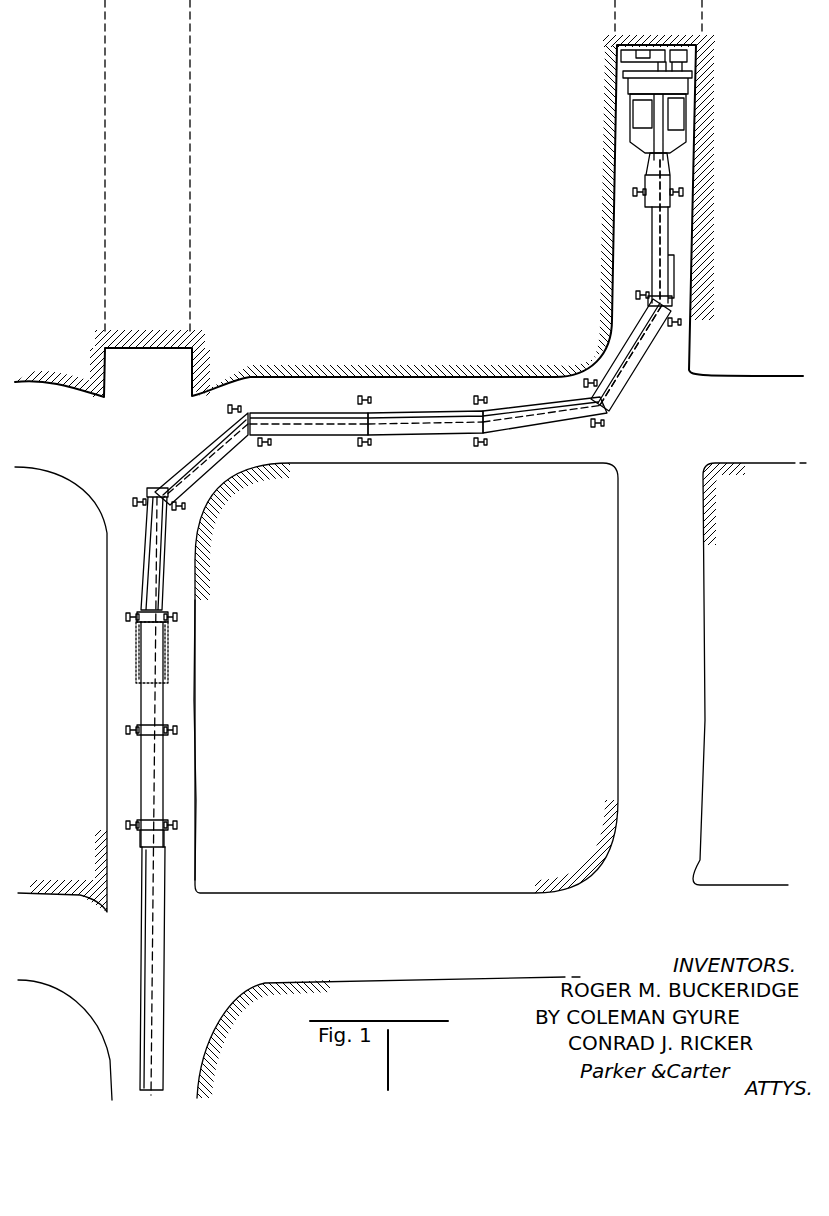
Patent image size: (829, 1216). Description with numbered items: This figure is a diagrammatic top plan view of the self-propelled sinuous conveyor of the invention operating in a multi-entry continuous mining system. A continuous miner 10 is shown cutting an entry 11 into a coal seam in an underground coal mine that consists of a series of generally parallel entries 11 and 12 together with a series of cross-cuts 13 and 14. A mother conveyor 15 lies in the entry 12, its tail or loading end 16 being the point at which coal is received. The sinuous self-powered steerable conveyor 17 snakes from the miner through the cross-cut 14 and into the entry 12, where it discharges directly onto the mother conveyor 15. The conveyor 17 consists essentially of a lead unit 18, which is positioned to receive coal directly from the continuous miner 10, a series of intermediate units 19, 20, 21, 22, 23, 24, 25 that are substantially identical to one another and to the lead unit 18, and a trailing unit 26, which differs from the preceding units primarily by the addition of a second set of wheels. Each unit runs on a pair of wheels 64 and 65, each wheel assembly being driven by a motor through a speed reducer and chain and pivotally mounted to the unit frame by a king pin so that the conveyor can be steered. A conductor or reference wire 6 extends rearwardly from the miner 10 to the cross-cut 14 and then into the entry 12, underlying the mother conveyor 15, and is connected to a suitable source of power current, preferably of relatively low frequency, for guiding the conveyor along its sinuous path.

The conductor or reference wire 6 is at (672, 178).
The continuous miner 10 is at (690, 113).
The entry 11 is at (695, 297).
The entry 12 is at (185, 780).
The cross-cut 13 is at (377, 910).
The cross-cut 14 is at (325, 393).
The mother conveyor 15 is at (166, 963).
The tail or loading end of the mother conveyor 16 is at (168, 643).
The sinuous self-powered steerable conveyor 17 is at (626, 398).
The lead unit 18 is at (672, 232).
The intermediate unit 19 is at (627, 352).
The intermediate unit 20 is at (546, 433).
The intermediate unit 21 is at (433, 436).
The intermediate unit 22 is at (325, 437).
The intermediate unit 23 is at (215, 468).
The intermediate unit 24 is at (145, 567).
The intermediate unit 25 is at (139, 693).
The trailing unit 26 is at (140, 797).
The wheel 64 is at (147, 494).
The wheel 65 is at (178, 508).